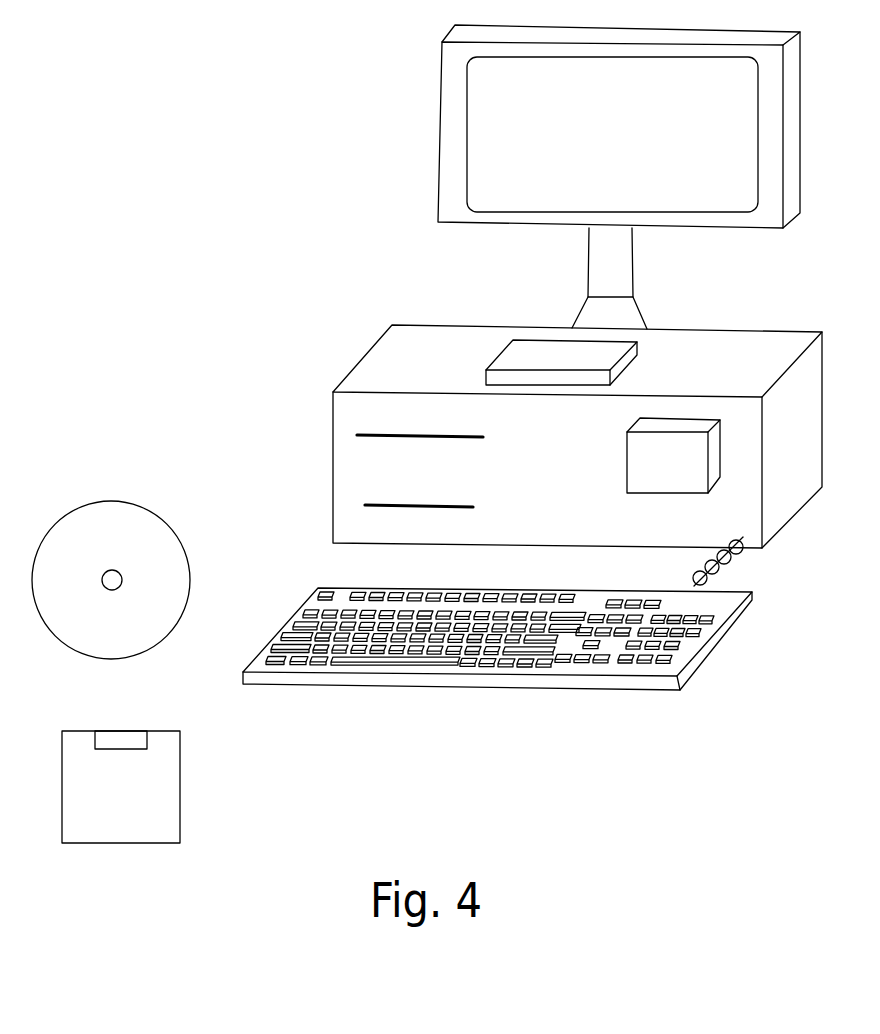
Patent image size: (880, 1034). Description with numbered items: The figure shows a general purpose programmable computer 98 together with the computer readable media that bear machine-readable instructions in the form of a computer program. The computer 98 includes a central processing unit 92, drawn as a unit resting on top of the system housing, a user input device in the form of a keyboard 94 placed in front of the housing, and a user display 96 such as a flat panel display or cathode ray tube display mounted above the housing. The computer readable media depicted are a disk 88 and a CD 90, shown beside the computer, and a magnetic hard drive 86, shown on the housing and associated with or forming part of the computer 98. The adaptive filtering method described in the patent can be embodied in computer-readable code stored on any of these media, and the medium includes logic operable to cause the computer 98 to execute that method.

The magnetic hard drive 86 is at (670, 493).
The disk 88 is at (172, 731).
The CD 90 is at (107, 502).
The central processing unit 92 is at (528, 337).
The keyboard 94 is at (317, 587).
The user display 96 is at (480, 123).
The general purpose programmable computer 98 is at (332, 437).